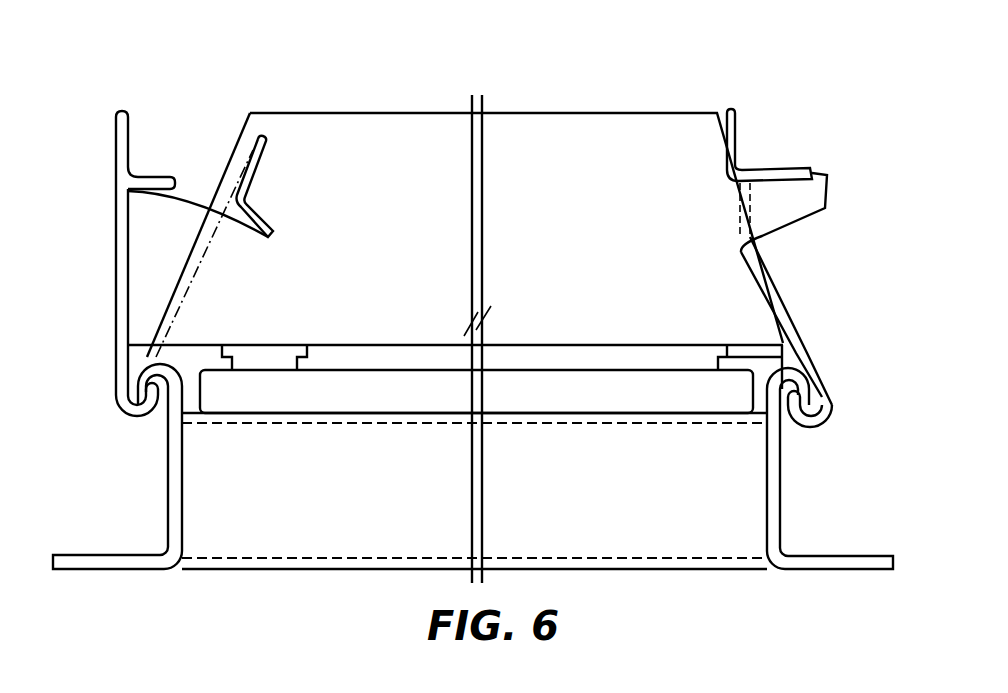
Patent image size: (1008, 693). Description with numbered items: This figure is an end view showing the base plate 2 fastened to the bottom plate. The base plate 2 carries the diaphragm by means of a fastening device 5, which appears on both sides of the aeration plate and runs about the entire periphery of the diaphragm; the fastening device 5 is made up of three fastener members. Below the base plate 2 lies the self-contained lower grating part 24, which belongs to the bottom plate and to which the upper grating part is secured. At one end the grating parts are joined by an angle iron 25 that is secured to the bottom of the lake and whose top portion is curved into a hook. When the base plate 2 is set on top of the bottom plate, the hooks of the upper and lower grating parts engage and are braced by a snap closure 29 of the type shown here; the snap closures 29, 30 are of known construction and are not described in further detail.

The base plate 2 is at (363, 383).
The fastening device 5 is at (260, 353).
The lower grating part 24 is at (312, 553).
The angle iron 25 is at (173, 482).
The snap closure 29 is at (778, 158).
The snap closure 30 is at (202, 113).